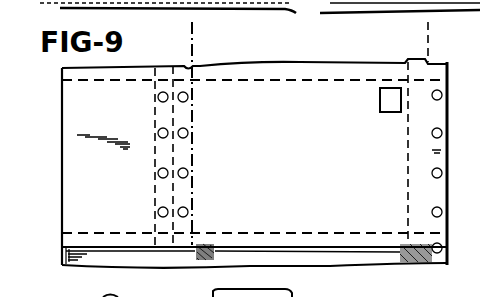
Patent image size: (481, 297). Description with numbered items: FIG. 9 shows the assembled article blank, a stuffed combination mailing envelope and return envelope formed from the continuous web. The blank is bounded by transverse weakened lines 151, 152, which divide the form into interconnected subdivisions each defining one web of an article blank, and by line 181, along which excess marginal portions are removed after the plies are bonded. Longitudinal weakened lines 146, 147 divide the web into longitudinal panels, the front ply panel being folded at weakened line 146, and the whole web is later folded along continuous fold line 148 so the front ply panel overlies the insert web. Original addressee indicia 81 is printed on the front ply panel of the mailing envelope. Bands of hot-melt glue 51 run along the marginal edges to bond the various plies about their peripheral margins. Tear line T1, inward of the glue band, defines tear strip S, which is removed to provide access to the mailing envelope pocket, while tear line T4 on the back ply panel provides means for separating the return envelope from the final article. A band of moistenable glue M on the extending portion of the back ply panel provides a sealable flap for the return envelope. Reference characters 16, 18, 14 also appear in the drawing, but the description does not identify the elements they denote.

The longitudinal weakened line 146 is at (173, 154).
The longitudinal weakened line 147 is at (177, 264).
The continuous fold line 148 is at (62, 178).
The transverse weakened line 151 is at (345, 80).
The transverse weakened line 152 is at (372, 207).
The line 181 is at (192, 190).
The original addressee indicia 81 is at (317, 186).
The tear line T1 is at (408, 182).
The tear line T4 is at (207, 247).
The tear strip S is at (427, 112).
The moistenable glue M is at (213, 257).
The glue 51 is at (200, 263).
The right edge 16 is at (447, 158).
The tab hole strip 18 is at (450, 136).
The tab marks 14 is at (456, 166).